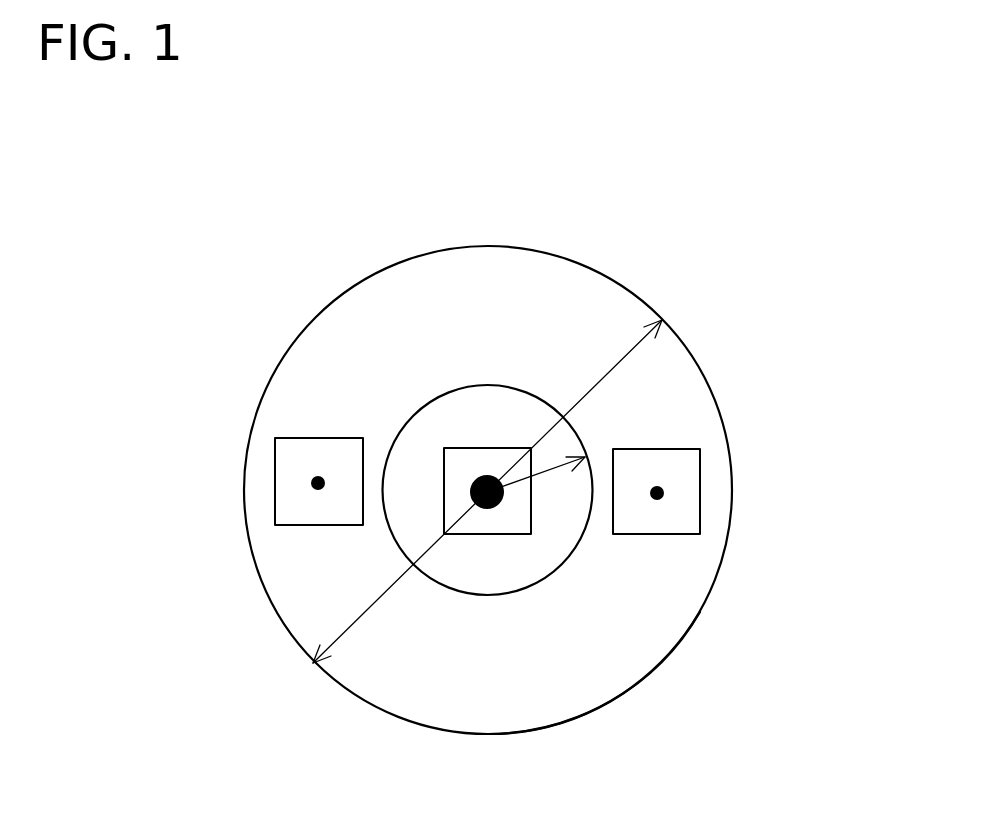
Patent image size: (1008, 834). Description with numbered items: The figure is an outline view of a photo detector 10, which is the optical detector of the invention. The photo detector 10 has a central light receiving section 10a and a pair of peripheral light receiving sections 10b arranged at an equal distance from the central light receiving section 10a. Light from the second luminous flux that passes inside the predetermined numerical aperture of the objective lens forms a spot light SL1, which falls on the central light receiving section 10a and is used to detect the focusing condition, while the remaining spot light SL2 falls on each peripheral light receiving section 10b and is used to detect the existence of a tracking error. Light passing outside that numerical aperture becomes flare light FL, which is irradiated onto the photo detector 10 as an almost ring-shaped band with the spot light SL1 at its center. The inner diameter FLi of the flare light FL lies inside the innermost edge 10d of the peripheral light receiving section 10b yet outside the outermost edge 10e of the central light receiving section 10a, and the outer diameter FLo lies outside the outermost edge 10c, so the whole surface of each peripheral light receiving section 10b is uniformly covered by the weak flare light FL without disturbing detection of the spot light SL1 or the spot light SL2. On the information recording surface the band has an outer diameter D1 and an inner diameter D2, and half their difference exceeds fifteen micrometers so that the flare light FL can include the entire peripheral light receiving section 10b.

The photo detector 10 is at (787, 423).
The central light receiving section 10a is at (488, 470).
The peripheral light receiving section 10b is at (318, 438).
The outermost edge of peripheral light receiving section 10c is at (275, 453).
The innermost edge of peripheral light receiving section 10d is at (363, 518).
The outermost edge of central light receiving section 10e is at (444, 460).
The spot light SL1 is at (487, 505).
The spot light SL2 is at (318, 483).
The outer diameter of ring-shaped band D1 is at (487, 491).
The inner diameter of ring-shaped band D2 is at (489, 484).
The flare light FL is at (617, 672).
The inner diameter of flare light FLi is at (518, 585).
The outer diameter of flare light FLo is at (678, 647).